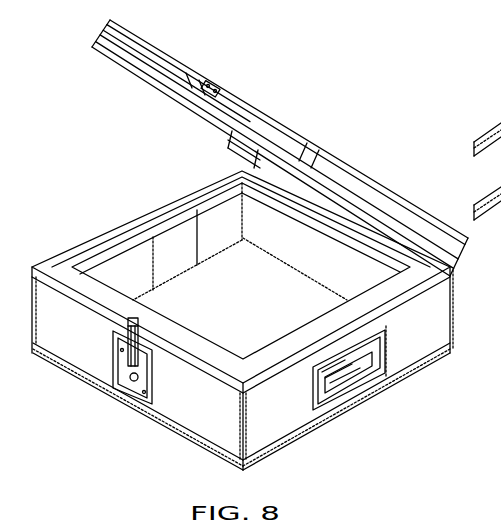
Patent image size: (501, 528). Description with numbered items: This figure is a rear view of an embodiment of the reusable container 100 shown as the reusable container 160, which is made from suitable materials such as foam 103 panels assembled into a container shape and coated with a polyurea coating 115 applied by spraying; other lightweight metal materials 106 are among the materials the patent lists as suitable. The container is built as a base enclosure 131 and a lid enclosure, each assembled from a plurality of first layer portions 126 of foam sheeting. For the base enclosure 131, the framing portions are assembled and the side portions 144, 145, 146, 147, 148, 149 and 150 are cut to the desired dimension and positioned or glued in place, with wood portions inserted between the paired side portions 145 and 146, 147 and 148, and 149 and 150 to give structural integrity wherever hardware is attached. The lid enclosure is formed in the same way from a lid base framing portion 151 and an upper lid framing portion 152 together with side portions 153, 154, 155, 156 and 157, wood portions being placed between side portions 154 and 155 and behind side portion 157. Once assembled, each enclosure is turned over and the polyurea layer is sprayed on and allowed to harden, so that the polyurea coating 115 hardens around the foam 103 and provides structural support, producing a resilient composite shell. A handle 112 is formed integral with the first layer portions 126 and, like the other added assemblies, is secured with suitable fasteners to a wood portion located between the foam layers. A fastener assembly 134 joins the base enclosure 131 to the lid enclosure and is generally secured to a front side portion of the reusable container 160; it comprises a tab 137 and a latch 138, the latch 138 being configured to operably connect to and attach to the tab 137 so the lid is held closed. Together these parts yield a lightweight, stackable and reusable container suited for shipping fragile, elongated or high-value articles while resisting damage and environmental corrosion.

The reusable container 100 is at (393, 469).
The foam 103 is at (107, 227).
The lightweight metal materials 106 is at (385, 347).
The handle 112 is at (350, 393).
The polyurea coating 115 is at (418, 293).
The first layer portion 126 is at (500, 517).
The base enclosure 131 is at (173, 408).
The fastener assembly 134 is at (150, 393).
The tab 137 is at (217, 82).
The latch 138 is at (140, 327).
The side portion 144 is at (297, 242).
The side portion 145 is at (432, 313).
The side portion 146 is at (282, 423).
The side portion 147 is at (197, 423).
The side portion 148 is at (78, 352).
The side portion 149 is at (115, 265).
The side portion 150 is at (222, 228).
The lid base framing portion 151 is at (297, 130).
The upper lid framing portion 152 is at (420, 247).
The side portion 153 is at (395, 213).
The side portion 154 is at (232, 104).
The side portion 155 is at (148, 55).
The side portion 156 is at (213, 125).
The side portion 157 is at (263, 150).
The reusable container 160 is at (122, 174).